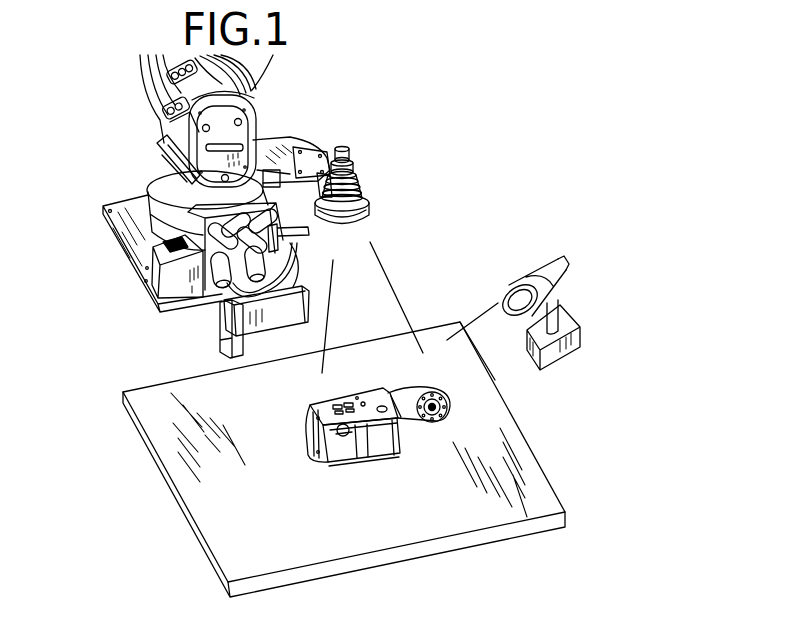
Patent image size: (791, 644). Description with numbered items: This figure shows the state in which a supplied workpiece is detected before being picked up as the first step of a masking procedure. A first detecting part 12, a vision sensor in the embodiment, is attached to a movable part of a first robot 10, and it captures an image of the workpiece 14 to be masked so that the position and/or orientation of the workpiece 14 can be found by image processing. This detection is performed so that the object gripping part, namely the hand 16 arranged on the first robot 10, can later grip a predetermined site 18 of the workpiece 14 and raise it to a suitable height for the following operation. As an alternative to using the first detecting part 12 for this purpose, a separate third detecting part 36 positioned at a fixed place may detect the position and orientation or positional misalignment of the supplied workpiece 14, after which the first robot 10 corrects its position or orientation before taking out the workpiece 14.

The first robot 10 is at (130, 116).
The first detecting part 12 is at (372, 173).
The workpiece 14 is at (381, 467).
The hand 16 is at (206, 340).
The predetermined site 18 is at (443, 422).
The third detecting part 36 is at (589, 267).